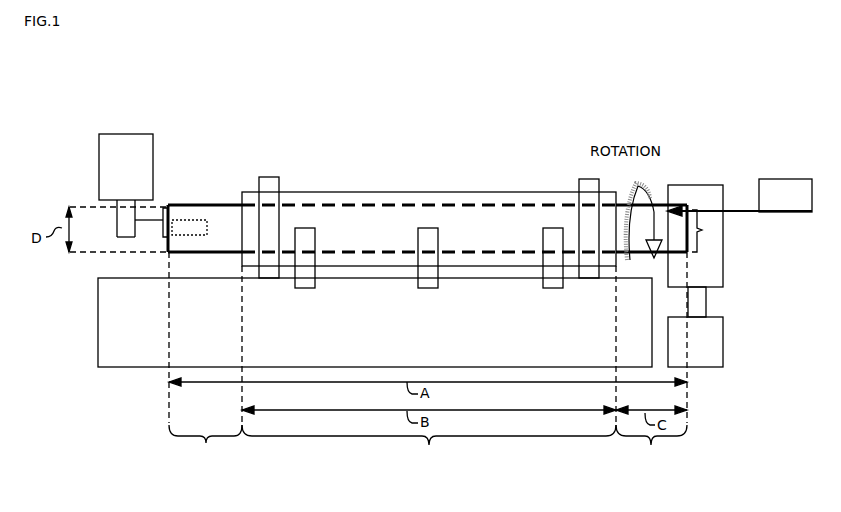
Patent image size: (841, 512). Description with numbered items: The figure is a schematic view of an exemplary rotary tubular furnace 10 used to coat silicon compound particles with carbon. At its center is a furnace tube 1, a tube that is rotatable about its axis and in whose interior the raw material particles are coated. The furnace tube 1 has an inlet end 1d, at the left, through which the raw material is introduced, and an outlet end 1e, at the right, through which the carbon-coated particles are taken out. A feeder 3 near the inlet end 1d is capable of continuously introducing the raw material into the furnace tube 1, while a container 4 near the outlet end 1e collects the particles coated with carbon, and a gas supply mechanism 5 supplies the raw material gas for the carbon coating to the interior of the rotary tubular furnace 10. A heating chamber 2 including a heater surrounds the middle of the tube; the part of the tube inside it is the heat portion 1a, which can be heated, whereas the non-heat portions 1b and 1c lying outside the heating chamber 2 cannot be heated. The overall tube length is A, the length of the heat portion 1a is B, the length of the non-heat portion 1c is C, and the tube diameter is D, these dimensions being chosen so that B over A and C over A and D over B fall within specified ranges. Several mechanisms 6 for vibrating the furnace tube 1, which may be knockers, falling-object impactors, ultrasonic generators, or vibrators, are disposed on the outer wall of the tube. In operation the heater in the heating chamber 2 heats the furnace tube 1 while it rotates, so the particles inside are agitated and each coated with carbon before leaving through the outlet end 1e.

The furnace tube 1 is at (213, 204).
The heat portion 1a is at (429, 450).
The non-heat portion 1b is at (205, 450).
The non-heat portion 1c is at (651, 450).
The inlet end 1d is at (158, 227).
The outlet end 1e is at (703, 230).
The heating chamber 2 is at (379, 190).
The feeder 3 is at (117, 163).
The container 4 is at (702, 343).
The gas supply mechanism 5 is at (785, 185).
The mechanism for vibrating the furnace tube 6 is at (308, 290).
The rotary tubular furnace 10 is at (630, 91).